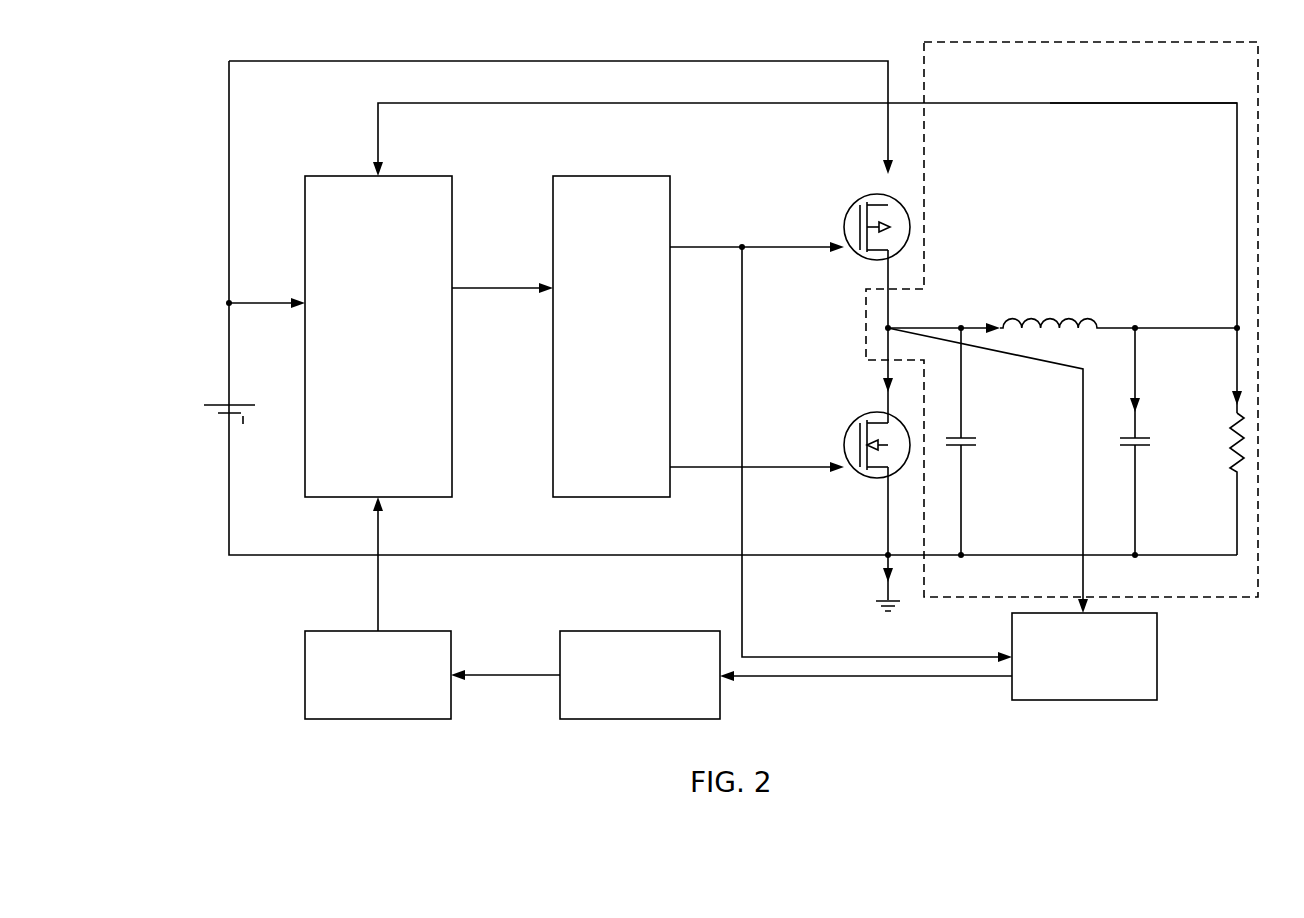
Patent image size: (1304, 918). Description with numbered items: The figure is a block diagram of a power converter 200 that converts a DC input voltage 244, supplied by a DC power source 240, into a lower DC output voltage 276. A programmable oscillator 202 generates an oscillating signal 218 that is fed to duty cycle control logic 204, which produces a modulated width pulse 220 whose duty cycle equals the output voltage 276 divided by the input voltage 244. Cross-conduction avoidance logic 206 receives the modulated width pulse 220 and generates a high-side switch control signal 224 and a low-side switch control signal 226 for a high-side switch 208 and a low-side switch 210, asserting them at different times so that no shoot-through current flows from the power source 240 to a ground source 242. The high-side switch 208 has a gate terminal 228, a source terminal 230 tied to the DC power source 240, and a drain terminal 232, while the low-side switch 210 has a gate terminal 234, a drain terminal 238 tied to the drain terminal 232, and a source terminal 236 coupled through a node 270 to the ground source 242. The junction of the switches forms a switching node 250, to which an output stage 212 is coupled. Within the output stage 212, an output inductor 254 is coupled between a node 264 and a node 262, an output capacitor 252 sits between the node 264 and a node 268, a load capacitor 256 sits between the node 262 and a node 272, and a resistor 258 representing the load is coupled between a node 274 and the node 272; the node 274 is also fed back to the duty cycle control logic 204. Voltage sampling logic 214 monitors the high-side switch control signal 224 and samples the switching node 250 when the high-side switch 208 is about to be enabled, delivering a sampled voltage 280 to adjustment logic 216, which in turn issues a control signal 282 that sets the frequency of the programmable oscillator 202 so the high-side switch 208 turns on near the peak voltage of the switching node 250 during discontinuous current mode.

The power converter 200 is at (248, 747).
The programmable oscillator 202 is at (327, 631).
The duty cycle control logic 204 is at (327, 176).
The cross-conduction avoidance logic 206 is at (574, 176).
The high-side switch 208 is at (848, 200).
The low-side switch 210 is at (848, 420).
The output stage 212 is at (1215, 598).
The voltage sampling logic 214 is at (1125, 700).
The adjustment logic 216 is at (597, 631).
The oscillating signal 218 is at (380, 572).
The modulated width pulse 220 is at (509, 286).
The high-side switch control signal 224 is at (706, 246).
The low-side switch control signal 226 is at (688, 466).
The gate terminal 228 is at (857, 212).
The source terminal 230 is at (876, 200).
The drain terminal 232 is at (878, 253).
The gate terminal 234 is at (857, 430).
The source terminal 236 is at (878, 471).
The drain terminal 238 is at (876, 418).
The DC power source 240 is at (212, 403).
The ground source 242 is at (876, 600).
The input voltage 244 is at (229, 320).
The switching node 250 is at (882, 326).
The output capacitor 252 is at (968, 448).
The output inductor 254 is at (1092, 322).
The load capacitor 256 is at (1141, 448).
The resistor 258 is at (1234, 420).
The node 262 is at (1138, 325).
The node 264 is at (961, 325).
The node 268 is at (962, 552).
The node 270 is at (893, 560).
The node 272 is at (1138, 552).
The node 274 is at (1235, 334).
The output voltage 276 is at (1088, 105).
The sampled voltage 280 is at (906, 678).
The control signal 282 is at (536, 677).